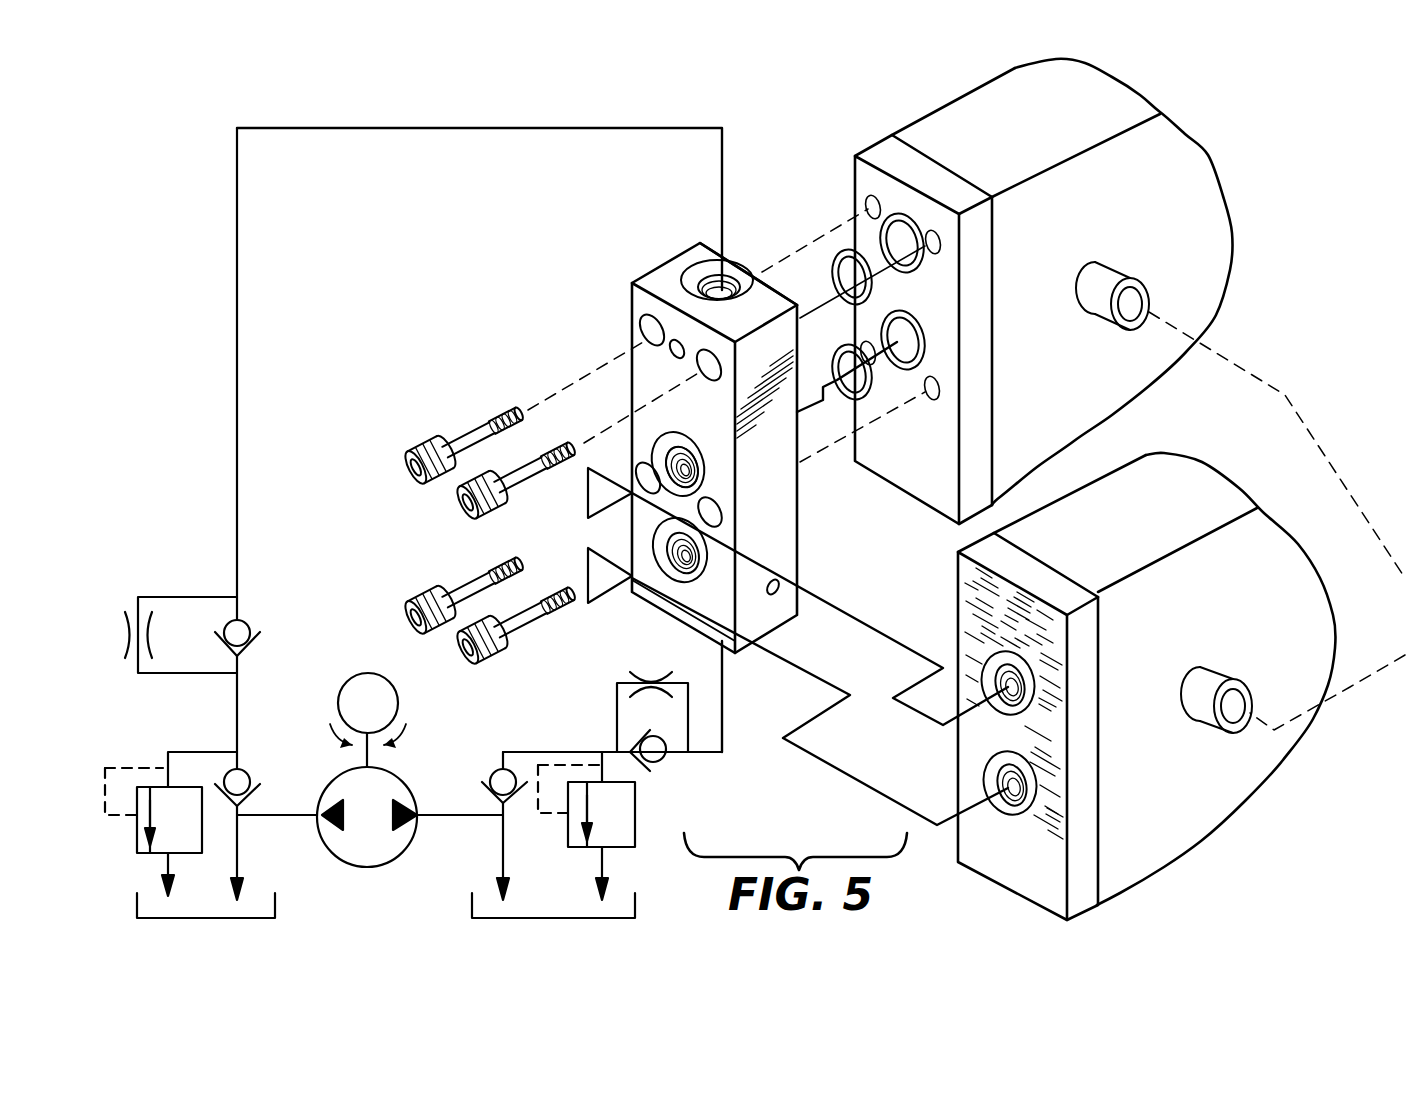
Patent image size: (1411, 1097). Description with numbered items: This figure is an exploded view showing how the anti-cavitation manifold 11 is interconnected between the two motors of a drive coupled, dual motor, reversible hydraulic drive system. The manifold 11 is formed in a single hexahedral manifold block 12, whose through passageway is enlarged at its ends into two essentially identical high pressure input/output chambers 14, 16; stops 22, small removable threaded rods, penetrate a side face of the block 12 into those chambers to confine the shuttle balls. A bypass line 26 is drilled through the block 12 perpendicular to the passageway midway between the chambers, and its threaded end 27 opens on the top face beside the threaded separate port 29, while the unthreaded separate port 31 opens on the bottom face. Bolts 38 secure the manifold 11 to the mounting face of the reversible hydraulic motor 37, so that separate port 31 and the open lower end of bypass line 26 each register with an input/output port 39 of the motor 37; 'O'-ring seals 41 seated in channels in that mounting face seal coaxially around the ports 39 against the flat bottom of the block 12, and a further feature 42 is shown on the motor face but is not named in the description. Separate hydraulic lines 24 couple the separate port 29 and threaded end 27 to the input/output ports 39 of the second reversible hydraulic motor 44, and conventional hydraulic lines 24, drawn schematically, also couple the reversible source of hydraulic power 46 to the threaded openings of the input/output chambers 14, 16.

The anti-cavitation manifold 11 is at (689, 415).
The manifold block 12 is at (700, 418).
The input/output chamber 14 is at (702, 268).
The input/output chamber 16 is at (660, 617).
The stops 22 is at (668, 347).
The hydraulic lines 24 is at (463, 125).
The bypass line 26 is at (652, 458).
The threaded end of bypass line 27 is at (698, 463).
The separate port 29 is at (699, 550).
The separate port 31 is at (762, 280).
The reversible hydraulic motor 37 is at (1220, 178).
The bolts 38 is at (473, 430).
The input/output port 39 is at (908, 250).
The 'O'-ring seals 41 is at (880, 337).
The port counterbore 42 is at (880, 222).
The second reversible hydraulic motor 44 is at (1202, 481).
The reversible source of hydraulic power 46 is at (400, 772).